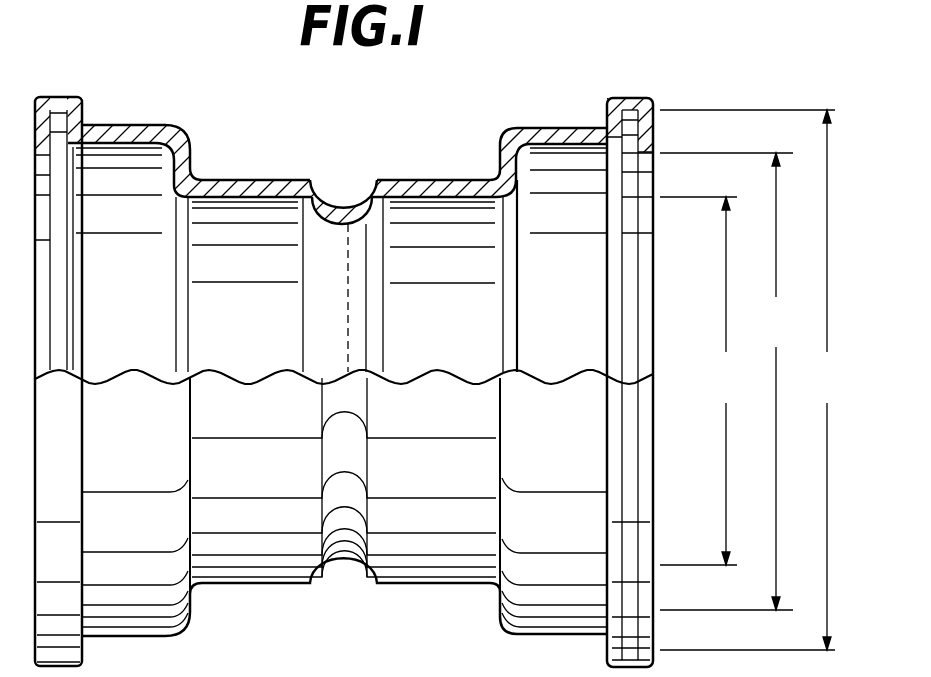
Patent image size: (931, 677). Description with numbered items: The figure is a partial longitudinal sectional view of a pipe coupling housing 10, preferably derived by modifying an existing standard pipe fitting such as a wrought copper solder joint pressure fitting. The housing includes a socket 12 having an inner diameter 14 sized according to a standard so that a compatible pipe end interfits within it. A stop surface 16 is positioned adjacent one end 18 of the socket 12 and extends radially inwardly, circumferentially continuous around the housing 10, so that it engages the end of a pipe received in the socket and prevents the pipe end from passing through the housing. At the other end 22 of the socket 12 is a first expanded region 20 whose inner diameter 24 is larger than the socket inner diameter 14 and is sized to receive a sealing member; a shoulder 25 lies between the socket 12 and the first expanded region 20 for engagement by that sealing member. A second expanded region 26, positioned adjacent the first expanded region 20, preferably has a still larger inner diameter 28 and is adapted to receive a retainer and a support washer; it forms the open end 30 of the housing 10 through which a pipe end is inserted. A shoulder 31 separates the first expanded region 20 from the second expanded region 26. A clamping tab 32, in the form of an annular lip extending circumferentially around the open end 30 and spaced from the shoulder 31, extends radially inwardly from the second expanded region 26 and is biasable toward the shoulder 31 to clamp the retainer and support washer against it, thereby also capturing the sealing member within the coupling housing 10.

The pipe coupling housing 10 is at (418, 575).
The socket 12 is at (472, 327).
The inner diameter 14 is at (701, 381).
The stop surface 16 is at (383, 342).
The one end 18 is at (383, 180).
The first expanded region 20 is at (562, 127).
The other end 22 is at (493, 180).
The inner diameter 24 is at (726, 381).
The shoulder 25 is at (516, 182).
The second expanded region 26 is at (625, 97).
The inner diameter 28 is at (752, 380).
The open end 30 is at (630, 298).
The shoulder 31 is at (642, 107).
The clamping tab 32 is at (645, 145).